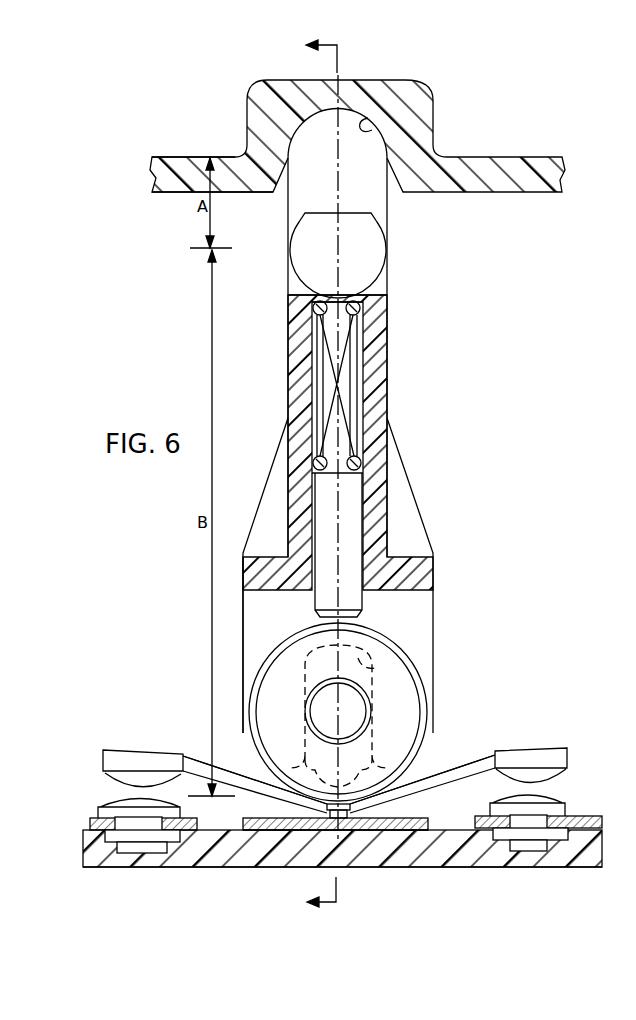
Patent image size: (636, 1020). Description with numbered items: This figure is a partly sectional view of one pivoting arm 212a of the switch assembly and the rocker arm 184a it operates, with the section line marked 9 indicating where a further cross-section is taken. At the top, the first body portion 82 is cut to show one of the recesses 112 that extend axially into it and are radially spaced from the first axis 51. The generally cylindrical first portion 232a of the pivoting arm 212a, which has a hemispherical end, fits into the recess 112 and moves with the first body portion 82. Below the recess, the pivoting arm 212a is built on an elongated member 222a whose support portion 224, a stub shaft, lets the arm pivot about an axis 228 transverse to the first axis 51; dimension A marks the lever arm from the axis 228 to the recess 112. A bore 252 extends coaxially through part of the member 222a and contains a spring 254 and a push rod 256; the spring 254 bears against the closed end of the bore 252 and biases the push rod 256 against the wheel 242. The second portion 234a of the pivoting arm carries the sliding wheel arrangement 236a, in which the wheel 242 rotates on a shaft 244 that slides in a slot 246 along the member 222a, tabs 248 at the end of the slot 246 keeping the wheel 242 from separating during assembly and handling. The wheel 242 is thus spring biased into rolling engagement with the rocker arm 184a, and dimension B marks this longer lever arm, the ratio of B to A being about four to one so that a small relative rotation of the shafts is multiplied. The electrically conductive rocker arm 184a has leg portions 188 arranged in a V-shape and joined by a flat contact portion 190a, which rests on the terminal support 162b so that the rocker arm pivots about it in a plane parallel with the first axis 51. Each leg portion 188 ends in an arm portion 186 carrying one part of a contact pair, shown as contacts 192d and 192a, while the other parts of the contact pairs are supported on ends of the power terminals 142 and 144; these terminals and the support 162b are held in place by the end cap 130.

The section line 9- 9 is at (314, 474).
The first axis 51 is at (307, 137).
The first body portion 82 is at (410, 127).
The recesses 112 is at (360, 126).
The first portion 232a is at (367, 177).
The axis 228 is at (340, 247).
The support portion 224 is at (373, 282).
The pivoting arm 212a is at (421, 302).
The elongated member 222a is at (395, 357).
The spring 254 is at (345, 407).
The bore 252 is at (357, 433).
The push rod 256 is at (353, 515).
The second portion 234a is at (421, 613).
The wheel 242 is at (260, 762).
The slot 246 is at (405, 654).
The shaft 244 is at (323, 708).
The sliding wheel arrangement 236a is at (436, 749).
The rocker arm 184a is at (481, 752).
The tabs 248 is at (387, 788).
The arm portion 186 is at (537, 758).
The contact pair part 192d is at (167, 777).
The contact pair part 192a is at (550, 806).
The power terminal 144 is at (586, 815).
The power terminal 142 is at (195, 833).
The leg portions 188 is at (373, 803).
The flat contact portion 190a is at (287, 867).
The support portion 162b is at (413, 830).
The end cap 130 is at (483, 857).